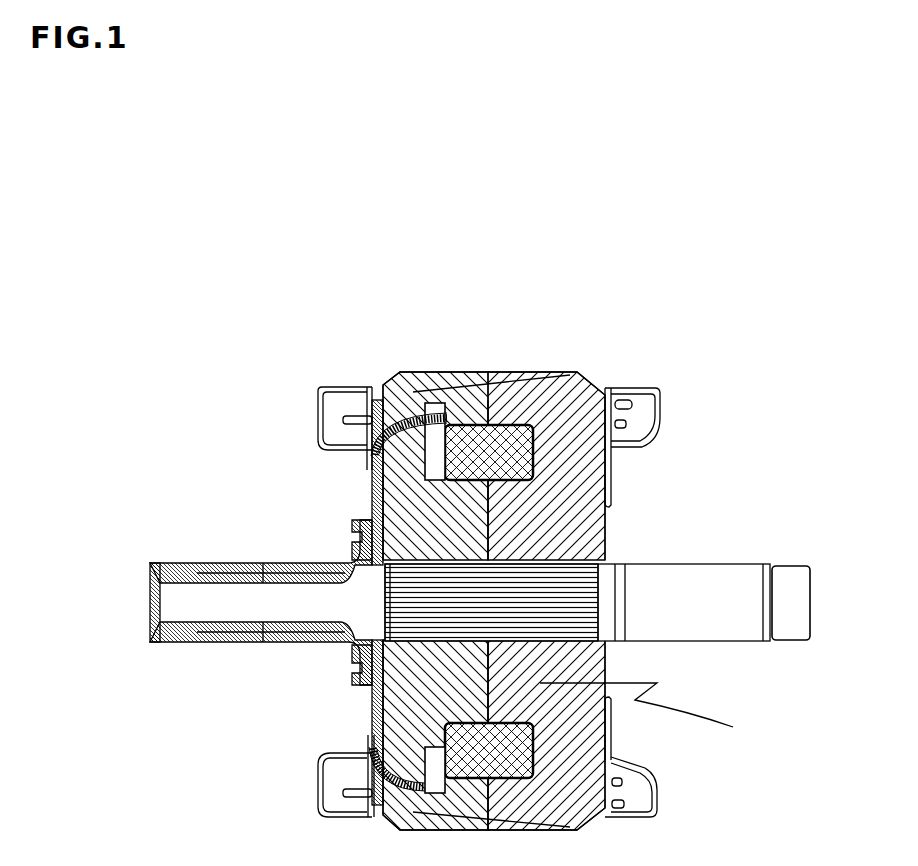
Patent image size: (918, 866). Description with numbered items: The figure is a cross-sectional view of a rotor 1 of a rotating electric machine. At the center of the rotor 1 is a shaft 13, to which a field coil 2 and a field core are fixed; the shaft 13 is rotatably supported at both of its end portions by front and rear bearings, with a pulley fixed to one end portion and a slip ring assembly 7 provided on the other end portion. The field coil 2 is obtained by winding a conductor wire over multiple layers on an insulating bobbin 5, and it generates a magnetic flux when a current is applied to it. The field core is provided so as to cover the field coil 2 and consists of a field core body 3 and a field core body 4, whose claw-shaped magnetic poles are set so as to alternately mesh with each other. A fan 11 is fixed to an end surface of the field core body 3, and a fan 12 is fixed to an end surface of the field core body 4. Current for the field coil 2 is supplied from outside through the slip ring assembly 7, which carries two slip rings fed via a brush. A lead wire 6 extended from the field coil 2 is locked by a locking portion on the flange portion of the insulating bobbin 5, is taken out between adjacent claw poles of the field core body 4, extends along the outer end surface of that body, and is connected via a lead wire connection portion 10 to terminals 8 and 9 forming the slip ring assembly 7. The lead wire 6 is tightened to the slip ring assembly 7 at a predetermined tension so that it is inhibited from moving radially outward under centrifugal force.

The rotor 1 is at (473, 355).
The field coil 2 is at (447, 424).
The field core body 3 is at (647, 709).
The field core body 4 is at (375, 466).
The insulating bobbin 5 is at (428, 420).
The lead wire 6 is at (363, 718).
The slip ring assembly 7 is at (145, 572).
The terminal 8 is at (242, 642).
The terminal 9 is at (262, 565).
The lead wire connection portion 10 is at (360, 690).
The fan 11 is at (660, 412).
The fan 12 is at (320, 410).
The shaft 13 is at (688, 558).